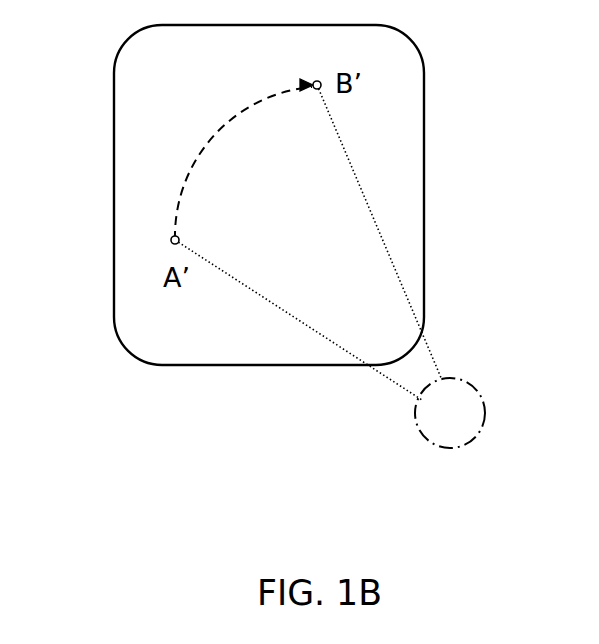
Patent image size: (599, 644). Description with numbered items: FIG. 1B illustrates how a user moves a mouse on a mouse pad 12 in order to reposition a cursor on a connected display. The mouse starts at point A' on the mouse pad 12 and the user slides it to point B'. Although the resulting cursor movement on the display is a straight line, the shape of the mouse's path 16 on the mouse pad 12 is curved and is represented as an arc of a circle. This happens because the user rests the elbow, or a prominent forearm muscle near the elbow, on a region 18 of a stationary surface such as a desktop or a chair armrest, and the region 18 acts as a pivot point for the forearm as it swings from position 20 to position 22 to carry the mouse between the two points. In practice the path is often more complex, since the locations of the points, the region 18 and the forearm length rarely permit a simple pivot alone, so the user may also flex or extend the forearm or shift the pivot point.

The mouse pad 12 is at (113, 130).
The mouse's path 16 is at (240, 113).
The region of a stationary surface 18 is at (470, 380).
The forearm position 20 is at (285, 310).
The forearm position 22 is at (347, 158).